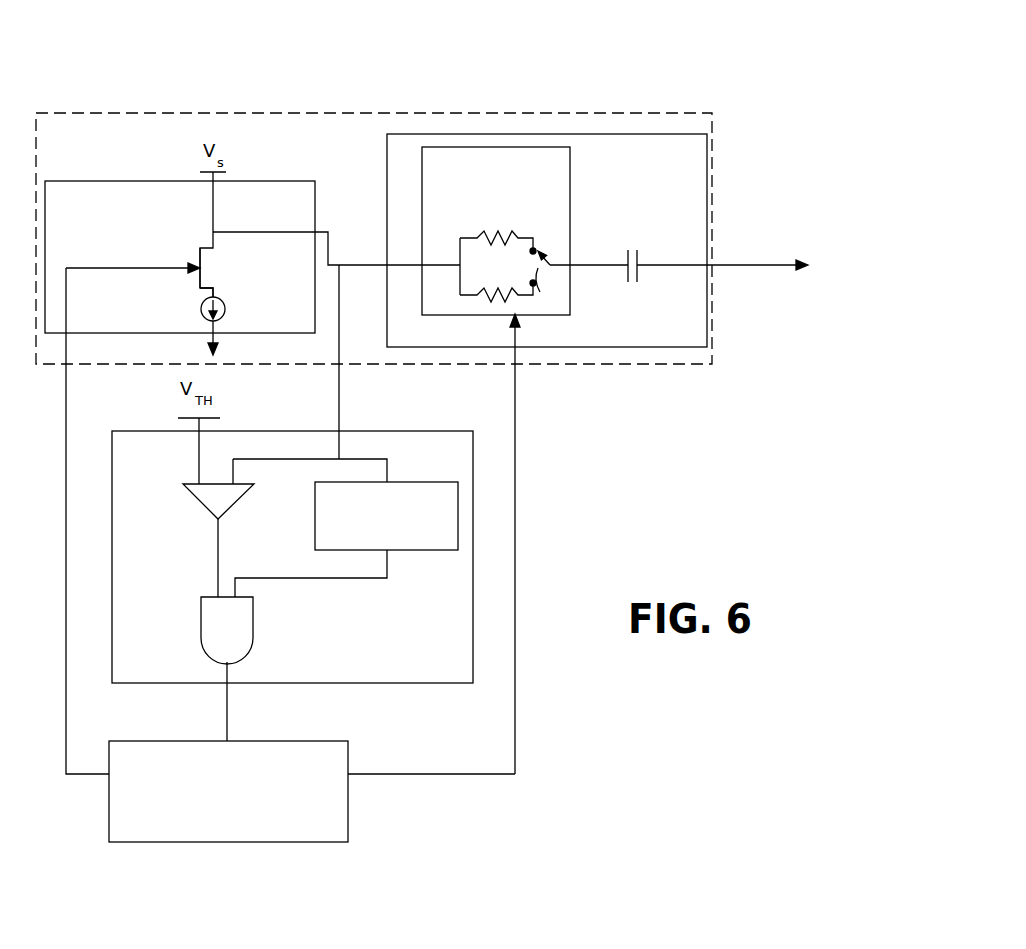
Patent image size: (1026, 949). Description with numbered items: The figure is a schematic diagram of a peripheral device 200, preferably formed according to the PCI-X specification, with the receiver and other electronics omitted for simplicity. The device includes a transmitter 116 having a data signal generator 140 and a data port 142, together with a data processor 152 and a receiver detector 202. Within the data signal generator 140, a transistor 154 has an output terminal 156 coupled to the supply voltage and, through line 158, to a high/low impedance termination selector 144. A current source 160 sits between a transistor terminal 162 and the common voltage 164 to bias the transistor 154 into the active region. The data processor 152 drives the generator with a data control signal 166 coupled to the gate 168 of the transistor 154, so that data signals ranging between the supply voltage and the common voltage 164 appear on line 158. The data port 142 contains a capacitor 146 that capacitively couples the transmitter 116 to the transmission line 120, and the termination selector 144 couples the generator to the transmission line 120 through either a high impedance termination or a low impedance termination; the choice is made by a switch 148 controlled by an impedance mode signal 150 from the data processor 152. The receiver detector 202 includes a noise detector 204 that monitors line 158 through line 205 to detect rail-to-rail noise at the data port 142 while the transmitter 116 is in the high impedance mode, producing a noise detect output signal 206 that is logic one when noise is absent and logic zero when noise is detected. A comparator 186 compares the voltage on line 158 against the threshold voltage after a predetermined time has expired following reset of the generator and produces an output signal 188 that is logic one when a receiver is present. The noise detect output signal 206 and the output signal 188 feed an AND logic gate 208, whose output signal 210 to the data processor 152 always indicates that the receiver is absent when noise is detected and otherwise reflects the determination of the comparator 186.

The peripheral device 200 is at (130, 64).
The transmitter 116 is at (346, 108).
The data signal generator 140 is at (129, 181).
The data port 142 is at (684, 135).
The high/low impedance termination selector 144 is at (466, 147).
The capacitor 146 is at (636, 250).
The switch 148 is at (551, 268).
The transmission line 120 is at (783, 268).
The impedance mode signal 150 is at (515, 478).
The data processor 152 is at (332, 741).
The transistor 154 is at (198, 263).
The output terminal 156 is at (214, 233).
The line 158 is at (329, 253).
The current source 160 is at (221, 299).
The transistor terminal 162 is at (215, 290).
The common voltage 164 is at (216, 343).
The data control signal 166 is at (66, 453).
The gate 168 is at (200, 283).
The comparator 186 is at (222, 500).
The output signal 188 is at (218, 541).
The receiver detector 202 is at (422, 683).
The noise detector 204 is at (393, 482).
The line 205 is at (340, 406).
The noise detect output signal 206 is at (318, 578).
The AND logic gate 208 is at (200, 618).
The output signal 210 is at (227, 731).